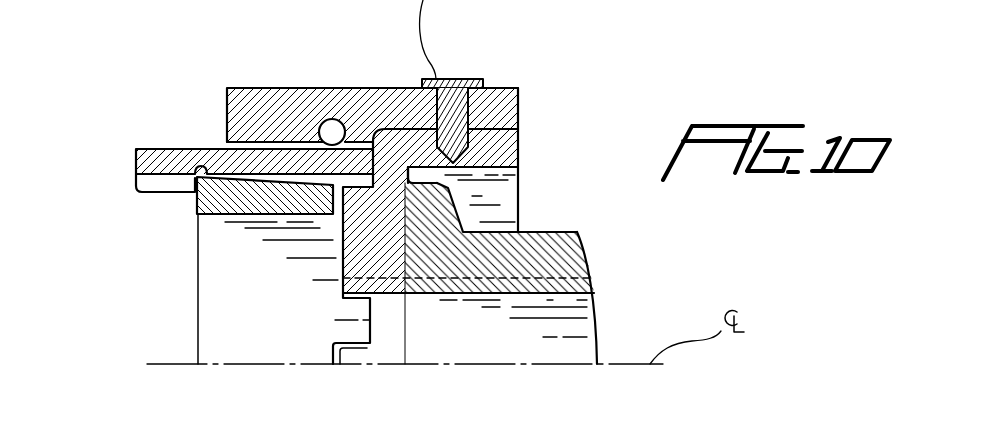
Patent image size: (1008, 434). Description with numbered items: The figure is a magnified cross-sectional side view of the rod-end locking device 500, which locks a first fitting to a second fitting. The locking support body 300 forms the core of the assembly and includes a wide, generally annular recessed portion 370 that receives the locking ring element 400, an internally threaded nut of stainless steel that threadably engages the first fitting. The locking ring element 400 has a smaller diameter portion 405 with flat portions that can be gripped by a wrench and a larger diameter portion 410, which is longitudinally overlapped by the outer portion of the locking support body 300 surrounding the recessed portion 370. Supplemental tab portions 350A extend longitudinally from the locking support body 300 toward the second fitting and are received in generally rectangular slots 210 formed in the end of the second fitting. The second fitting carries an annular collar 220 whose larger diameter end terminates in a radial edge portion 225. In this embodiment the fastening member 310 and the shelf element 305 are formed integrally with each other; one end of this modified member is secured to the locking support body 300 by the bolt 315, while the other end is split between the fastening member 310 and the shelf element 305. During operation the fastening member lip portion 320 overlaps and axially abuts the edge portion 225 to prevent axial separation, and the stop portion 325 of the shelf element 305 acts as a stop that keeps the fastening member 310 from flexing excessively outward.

The slots 210 is at (333, 348).
The collar 220 is at (220, 236).
The edge portion 225 is at (197, 190).
The locking support body 300 is at (500, 143).
The shelf element 305 is at (292, 107).
The fastening member 310 is at (139, 150).
The bolt 315 is at (458, 76).
The fastening member lip portion 320 is at (200, 170).
The stop portion 325 is at (241, 146).
The supplemental tab portions 350A is at (349, 356).
The recessed portion 370 is at (495, 189).
The locking ring element 400 is at (555, 266).
The smaller diameter portion 405 is at (503, 231).
The larger diameter portion 410 is at (518, 175).
The rod-end locking device 500 is at (789, 7).